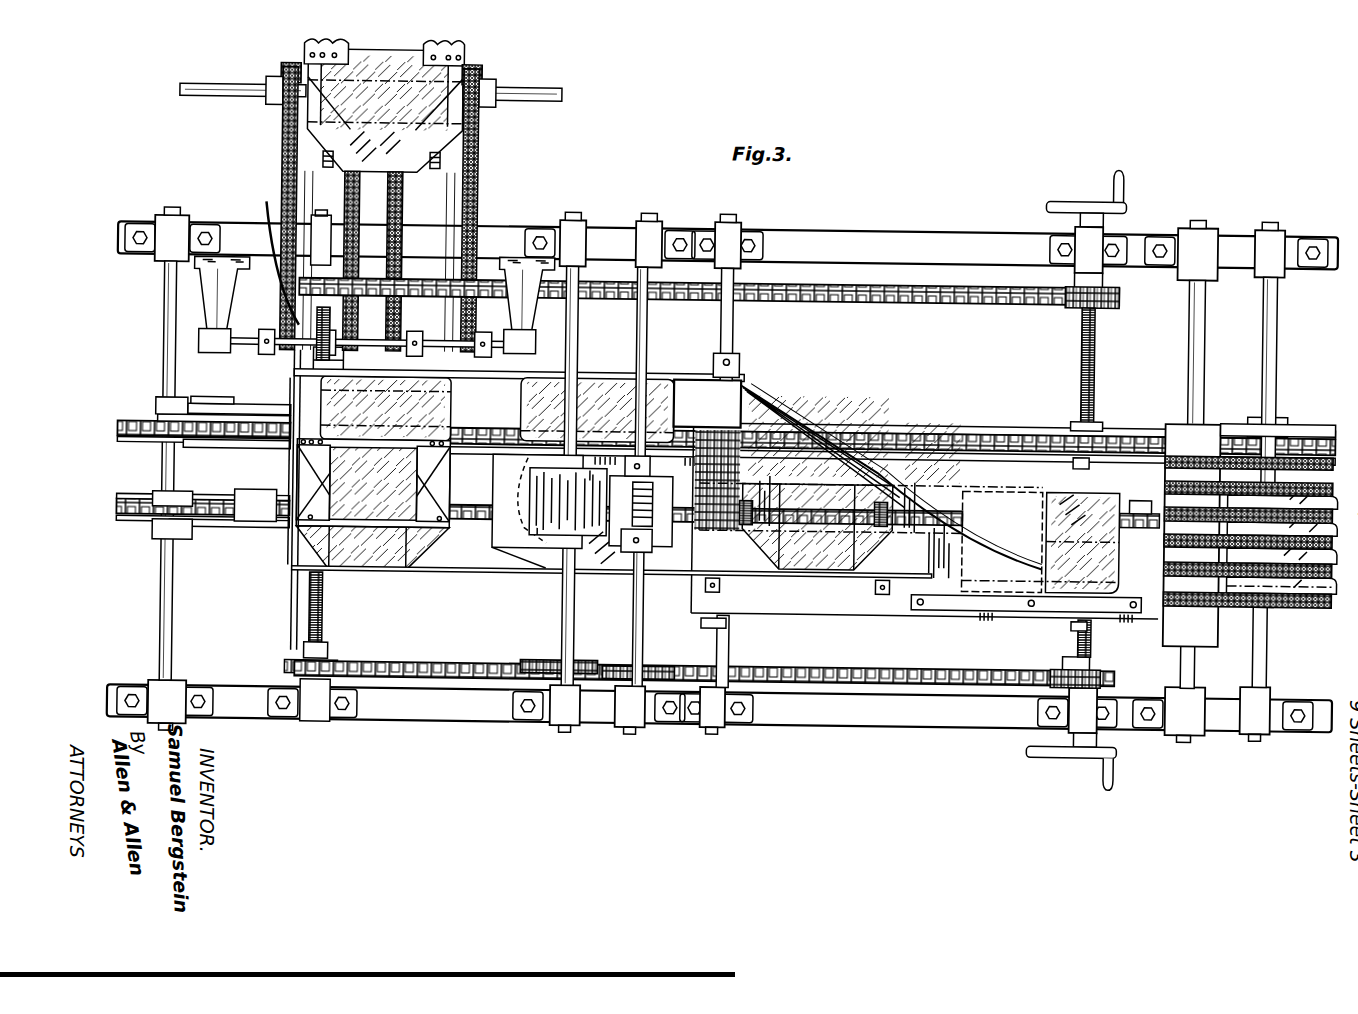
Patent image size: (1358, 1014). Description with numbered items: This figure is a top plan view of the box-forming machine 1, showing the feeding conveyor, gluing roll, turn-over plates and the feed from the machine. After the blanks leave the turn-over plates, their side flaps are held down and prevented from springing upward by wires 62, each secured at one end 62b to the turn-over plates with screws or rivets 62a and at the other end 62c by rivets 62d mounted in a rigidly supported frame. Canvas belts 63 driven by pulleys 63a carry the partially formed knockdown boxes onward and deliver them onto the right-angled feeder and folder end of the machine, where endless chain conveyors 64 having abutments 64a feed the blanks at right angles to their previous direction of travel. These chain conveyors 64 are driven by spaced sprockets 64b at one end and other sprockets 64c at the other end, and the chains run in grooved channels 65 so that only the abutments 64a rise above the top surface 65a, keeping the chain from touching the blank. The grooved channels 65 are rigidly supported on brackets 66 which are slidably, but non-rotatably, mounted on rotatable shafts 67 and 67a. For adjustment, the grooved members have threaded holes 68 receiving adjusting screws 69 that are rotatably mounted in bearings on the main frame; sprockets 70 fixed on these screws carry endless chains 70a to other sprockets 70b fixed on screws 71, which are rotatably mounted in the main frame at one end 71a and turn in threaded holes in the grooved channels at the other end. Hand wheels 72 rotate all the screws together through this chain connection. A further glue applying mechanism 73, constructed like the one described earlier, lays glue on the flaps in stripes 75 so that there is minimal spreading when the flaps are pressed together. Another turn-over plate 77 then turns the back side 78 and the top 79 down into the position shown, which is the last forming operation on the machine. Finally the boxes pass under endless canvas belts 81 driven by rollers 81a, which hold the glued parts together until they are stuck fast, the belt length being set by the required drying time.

The frame rail 1 is at (822, 235).
The wires 62 is at (310, 186).
The screws or rivets 62a is at (308, 58).
The end of wire 62b is at (288, 72).
The other end of wire 62c is at (445, 420).
The rivets 62d is at (296, 468).
The canvas belts 63 is at (470, 216).
The pulleys 63a is at (272, 112).
The endless chain conveyors 64 is at (118, 512).
The abutments 64a is at (985, 395).
The spaced sprockets 64b is at (118, 432).
The other sprockets 64c is at (1288, 430).
The grooved channels 65 is at (920, 430).
The top surface 65a is at (300, 410).
The brackets 66 is at (176, 405).
The rotatable shaft 67 is at (176, 640).
The rotatable shaft 67a is at (1270, 664).
The threaded holes 68 is at (1096, 426).
The adjusting screws 69 is at (1094, 386).
The sprockets 70 is at (1100, 672).
The endless chains 70a is at (963, 300).
The sprockets 70b is at (290, 298).
The screws 71 is at (330, 328).
The end of screw 71a is at (326, 728).
The hand wheels 72 is at (1120, 204).
The glue applying mechanism 73 is at (576, 585).
The stripes 75 is at (745, 522).
The turn-over plate 77 is at (978, 492).
The back side 78 is at (1072, 498).
The top 79 is at (1105, 554).
The endless canvas belts 81 is at (1240, 625).
The rollers 81a is at (1175, 640).